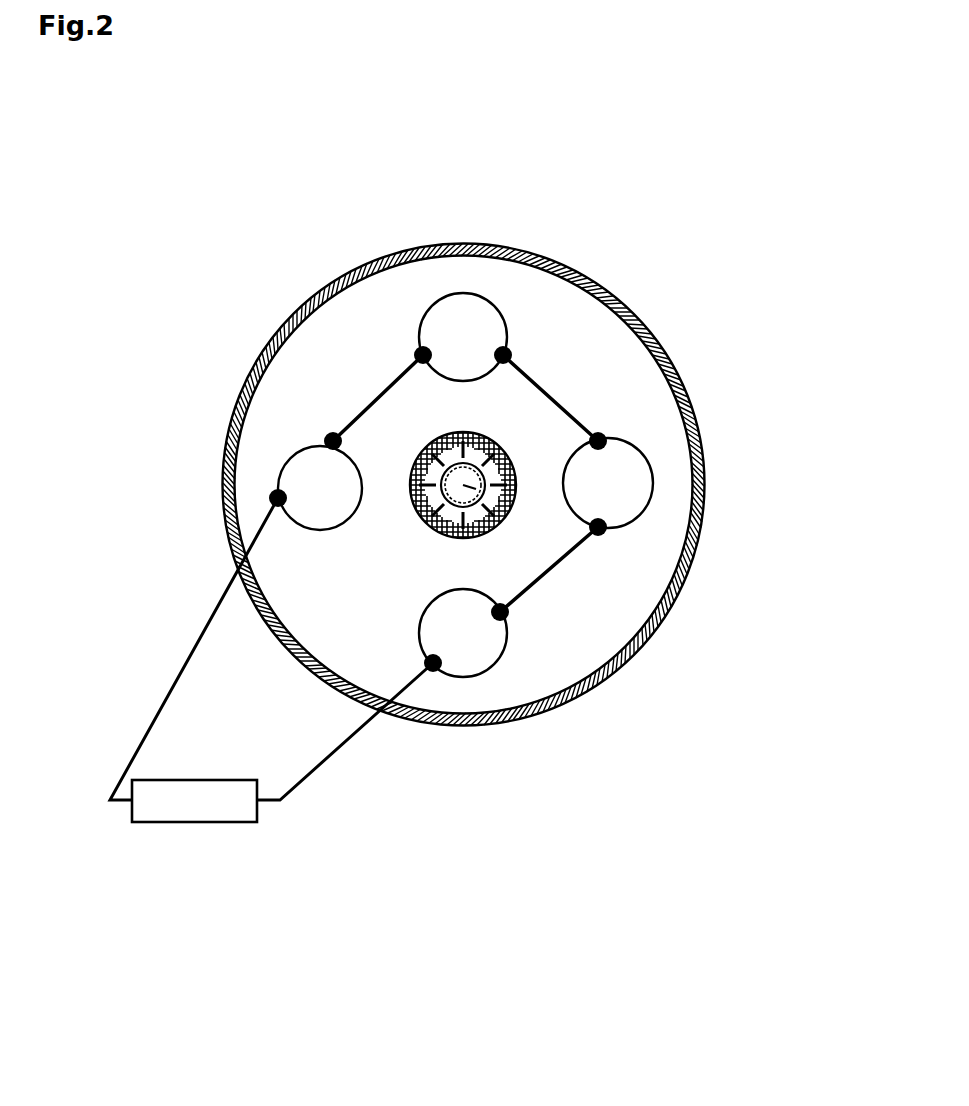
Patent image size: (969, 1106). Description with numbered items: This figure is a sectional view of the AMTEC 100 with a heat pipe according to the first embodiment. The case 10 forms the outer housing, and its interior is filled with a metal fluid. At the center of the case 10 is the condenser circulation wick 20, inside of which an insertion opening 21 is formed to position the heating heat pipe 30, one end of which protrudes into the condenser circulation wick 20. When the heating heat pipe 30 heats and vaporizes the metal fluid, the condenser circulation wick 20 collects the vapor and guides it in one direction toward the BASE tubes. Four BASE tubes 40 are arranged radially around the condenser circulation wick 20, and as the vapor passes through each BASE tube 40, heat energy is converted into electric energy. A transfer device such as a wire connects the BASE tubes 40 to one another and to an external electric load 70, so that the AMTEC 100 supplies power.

The AMTEC 100 is at (662, 220).
The case 10 is at (674, 359).
The condenser circulation wick 20 is at (498, 517).
The insertion opening 21 is at (466, 487).
The heating heat pipe 30 is at (517, 503).
The BASE tube 40 is at (283, 463).
The external electric load 70 is at (194, 797).